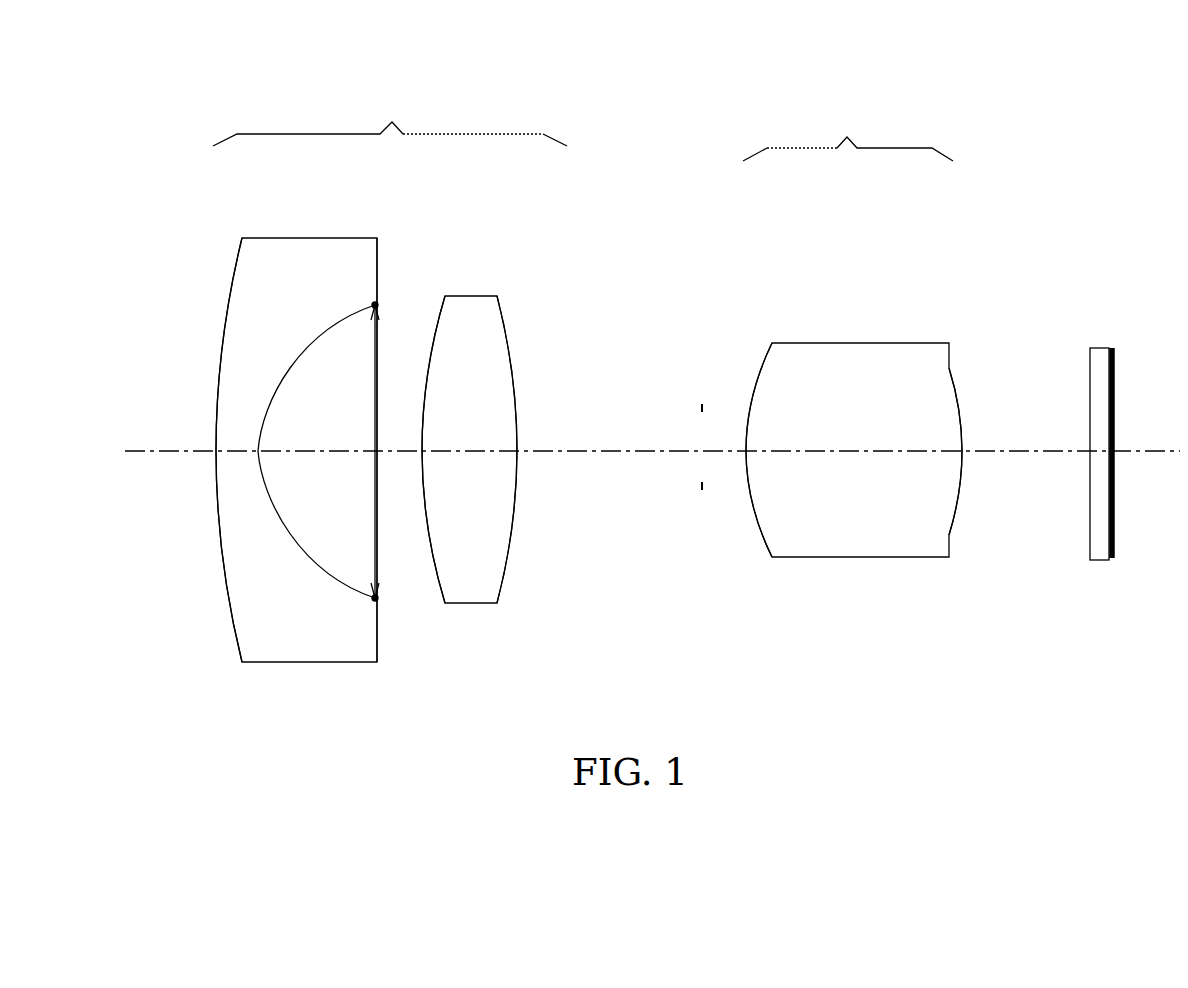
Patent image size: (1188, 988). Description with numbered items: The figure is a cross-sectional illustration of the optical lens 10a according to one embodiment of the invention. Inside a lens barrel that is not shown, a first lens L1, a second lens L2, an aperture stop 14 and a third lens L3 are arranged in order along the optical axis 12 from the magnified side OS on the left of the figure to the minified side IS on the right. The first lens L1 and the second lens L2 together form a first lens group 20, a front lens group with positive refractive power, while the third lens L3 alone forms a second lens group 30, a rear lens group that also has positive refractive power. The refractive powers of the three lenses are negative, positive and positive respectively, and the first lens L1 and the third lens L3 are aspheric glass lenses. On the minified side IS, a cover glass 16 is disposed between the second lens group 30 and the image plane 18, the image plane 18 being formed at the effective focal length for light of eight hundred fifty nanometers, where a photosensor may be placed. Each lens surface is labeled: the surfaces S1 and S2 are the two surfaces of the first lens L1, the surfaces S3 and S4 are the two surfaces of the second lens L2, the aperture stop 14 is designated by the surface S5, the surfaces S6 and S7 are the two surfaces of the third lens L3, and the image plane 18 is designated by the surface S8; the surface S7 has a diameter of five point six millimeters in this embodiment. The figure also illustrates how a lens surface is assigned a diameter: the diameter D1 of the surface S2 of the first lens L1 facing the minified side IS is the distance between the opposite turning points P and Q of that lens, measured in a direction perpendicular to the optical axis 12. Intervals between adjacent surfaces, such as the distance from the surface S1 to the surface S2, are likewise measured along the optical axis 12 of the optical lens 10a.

The optical lens 10a is at (199, 94).
The optical axis 12 is at (165, 448).
The aperture stop 14 is at (702, 405).
The cover glass 16 is at (1095, 348).
The image plane 18 is at (1113, 350).
The first lens group 20 is at (390, 120).
The second lens group 30 is at (848, 129).
The first lens L1 is at (283, 252).
The second lens L2 is at (462, 310).
The third lens L3 is at (850, 343).
The surface S1 is at (235, 630).
The surface S2 is at (378, 640).
The surface S3 is at (436, 575).
The surface S4 is at (506, 568).
The surface S5 is at (702, 490).
The surface S6 is at (761, 530).
The surface S7 is at (955, 517).
The surface S8 is at (1113, 535).
The turning point P is at (377, 304).
The turning point Q is at (377, 597).
The diameter D1 is at (360, 451).
The magnified side OS is at (156, 264).
The minified side IS is at (1009, 264).